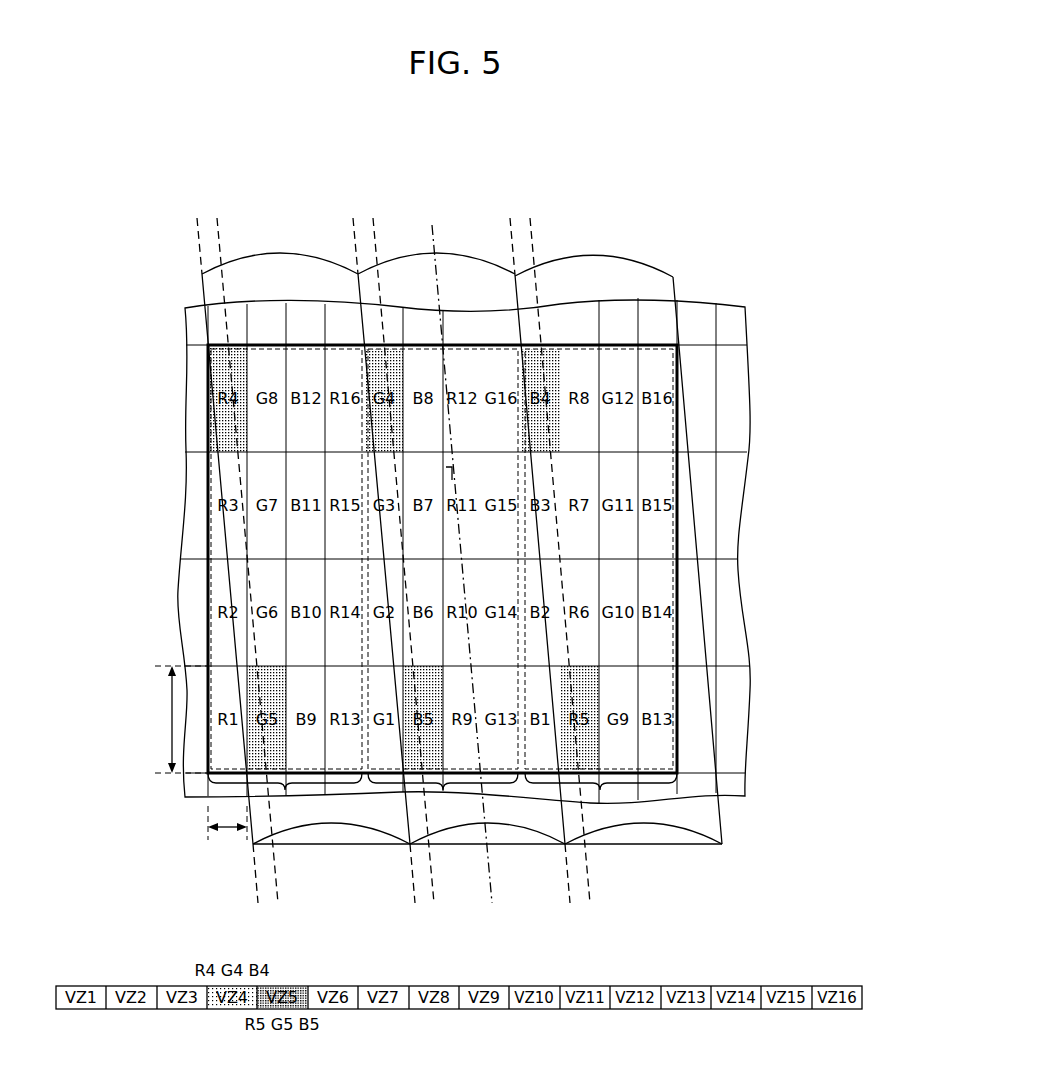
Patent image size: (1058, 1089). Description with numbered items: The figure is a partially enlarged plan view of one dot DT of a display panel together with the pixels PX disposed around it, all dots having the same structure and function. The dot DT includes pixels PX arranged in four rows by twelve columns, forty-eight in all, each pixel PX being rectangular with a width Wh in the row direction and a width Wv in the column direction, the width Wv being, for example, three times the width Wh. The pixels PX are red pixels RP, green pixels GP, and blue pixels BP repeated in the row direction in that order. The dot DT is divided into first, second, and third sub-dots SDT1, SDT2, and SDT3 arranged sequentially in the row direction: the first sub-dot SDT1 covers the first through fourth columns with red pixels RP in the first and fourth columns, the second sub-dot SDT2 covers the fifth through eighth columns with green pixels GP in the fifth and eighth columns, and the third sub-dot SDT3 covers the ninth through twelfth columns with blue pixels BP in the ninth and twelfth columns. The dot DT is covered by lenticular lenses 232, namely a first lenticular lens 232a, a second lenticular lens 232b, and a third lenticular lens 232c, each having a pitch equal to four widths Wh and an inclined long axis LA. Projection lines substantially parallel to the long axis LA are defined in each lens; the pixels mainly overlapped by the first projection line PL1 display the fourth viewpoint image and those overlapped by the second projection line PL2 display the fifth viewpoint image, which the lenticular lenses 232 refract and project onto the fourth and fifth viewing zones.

The lenticular lenses 232 is at (270, 173).
The first lenticular lens 232a is at (287, 252).
The second lenticular lens 232b is at (445, 252).
The third lenticular lens 232c is at (600, 253).
The red pixel RP is at (228, 338).
The green pixel GP is at (262, 338).
The blue pixel BP is at (302, 338).
The long axis LA is at (455, 552).
The dot DT is at (205, 342).
The pixel PX is at (195, 399).
The width in the column direction Wv is at (173, 719).
The width in the row direction Wh is at (227, 833).
The first sub-dot SDT1 is at (285, 790).
The second sub-dot SDT2 is at (443, 790).
The third sub-dot SDT3 is at (600, 790).
The first projection line PL1 is at (387, 570).
The second projection line PL2 is at (419, 570).